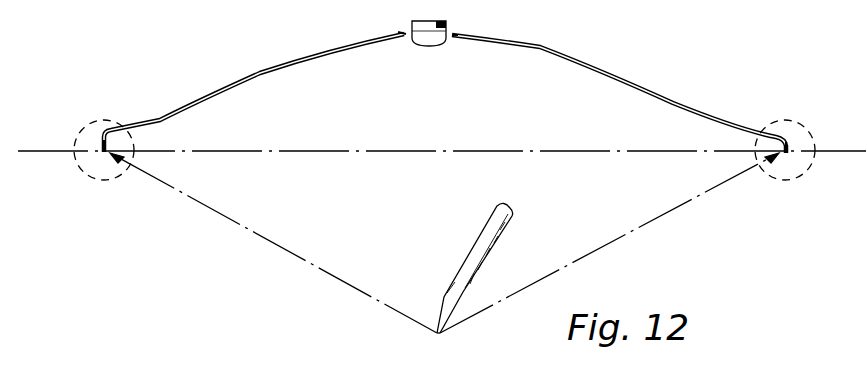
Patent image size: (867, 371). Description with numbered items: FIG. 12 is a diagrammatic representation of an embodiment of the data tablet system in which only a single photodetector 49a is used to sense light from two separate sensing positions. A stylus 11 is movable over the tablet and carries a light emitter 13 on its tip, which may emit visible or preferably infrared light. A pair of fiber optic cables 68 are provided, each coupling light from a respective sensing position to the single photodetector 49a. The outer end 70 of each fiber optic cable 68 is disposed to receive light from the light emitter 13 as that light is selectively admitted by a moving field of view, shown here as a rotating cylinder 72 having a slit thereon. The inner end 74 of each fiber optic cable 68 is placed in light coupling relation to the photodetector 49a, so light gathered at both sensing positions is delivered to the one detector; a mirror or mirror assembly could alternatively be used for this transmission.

The fiber optic cable 68 is at (258, 73).
The single photodetector 49a is at (429, 46).
The inner end 74 is at (407, 30).
The rotating cylinder 72 is at (78, 134).
The outer end 70 is at (100, 162).
The stylus 11 is at (476, 242).
The light emitter 13 is at (438, 337).